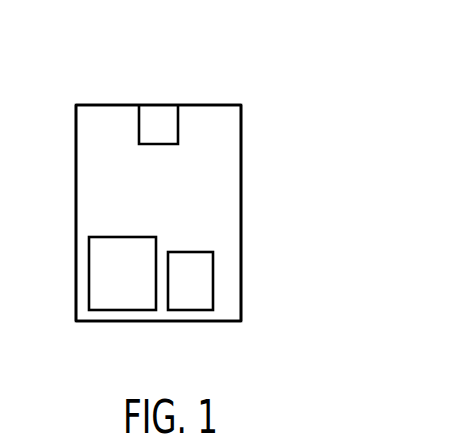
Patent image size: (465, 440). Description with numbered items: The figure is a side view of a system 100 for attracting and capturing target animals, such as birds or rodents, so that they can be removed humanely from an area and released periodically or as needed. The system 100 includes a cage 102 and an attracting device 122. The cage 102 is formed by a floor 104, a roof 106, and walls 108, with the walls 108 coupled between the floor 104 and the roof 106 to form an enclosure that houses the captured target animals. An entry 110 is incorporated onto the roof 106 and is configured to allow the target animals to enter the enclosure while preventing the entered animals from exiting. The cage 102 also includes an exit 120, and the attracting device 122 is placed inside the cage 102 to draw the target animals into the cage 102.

The system 100 is at (325, 51).
The cage 102 is at (248, 154).
The floor 104 is at (160, 322).
The roof 106 is at (220, 105).
The walls 108 is at (75, 213).
The entry 110 is at (159, 118).
The exit 120 is at (130, 245).
The attracting device 122 is at (186, 258).